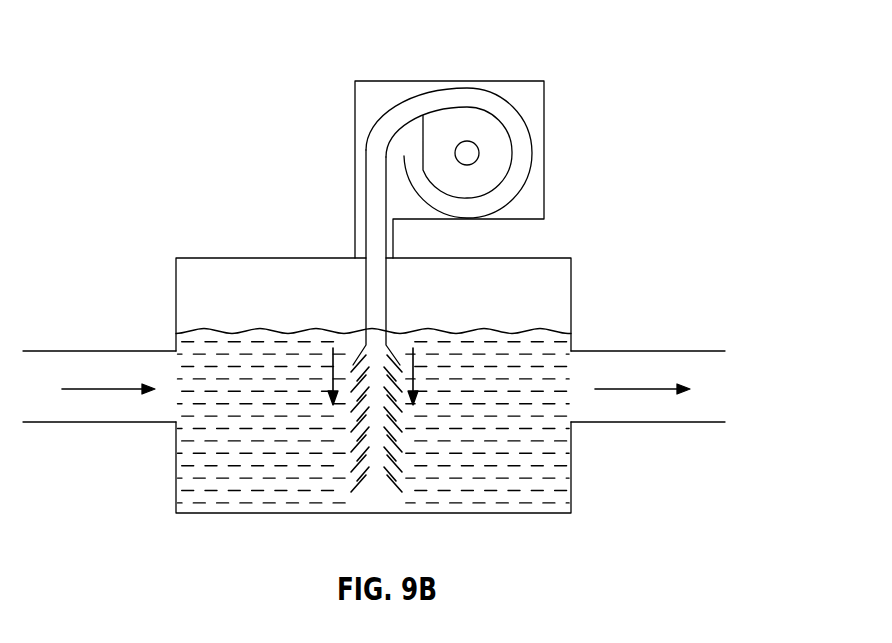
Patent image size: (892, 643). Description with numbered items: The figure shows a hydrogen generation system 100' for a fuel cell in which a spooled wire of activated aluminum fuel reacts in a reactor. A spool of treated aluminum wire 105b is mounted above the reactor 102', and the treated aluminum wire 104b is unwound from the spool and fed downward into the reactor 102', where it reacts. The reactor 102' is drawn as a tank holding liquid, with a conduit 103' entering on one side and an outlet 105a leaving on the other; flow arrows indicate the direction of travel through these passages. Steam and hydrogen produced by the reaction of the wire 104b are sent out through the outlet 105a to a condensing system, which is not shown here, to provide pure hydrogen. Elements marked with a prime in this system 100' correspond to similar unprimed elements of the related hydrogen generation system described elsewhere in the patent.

The hydrogen generation system 100' is at (393, 233).
The reactor 102' is at (373, 353).
The inlet conduit 103' is at (99, 420).
The treated aluminum wire 104b is at (366, 308).
The outlet 105a is at (692, 423).
The spool of treated aluminum wire 105b is at (510, 82).